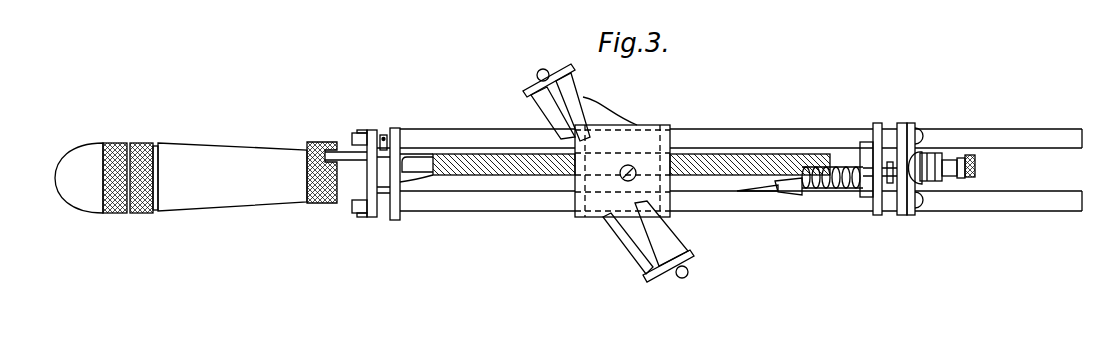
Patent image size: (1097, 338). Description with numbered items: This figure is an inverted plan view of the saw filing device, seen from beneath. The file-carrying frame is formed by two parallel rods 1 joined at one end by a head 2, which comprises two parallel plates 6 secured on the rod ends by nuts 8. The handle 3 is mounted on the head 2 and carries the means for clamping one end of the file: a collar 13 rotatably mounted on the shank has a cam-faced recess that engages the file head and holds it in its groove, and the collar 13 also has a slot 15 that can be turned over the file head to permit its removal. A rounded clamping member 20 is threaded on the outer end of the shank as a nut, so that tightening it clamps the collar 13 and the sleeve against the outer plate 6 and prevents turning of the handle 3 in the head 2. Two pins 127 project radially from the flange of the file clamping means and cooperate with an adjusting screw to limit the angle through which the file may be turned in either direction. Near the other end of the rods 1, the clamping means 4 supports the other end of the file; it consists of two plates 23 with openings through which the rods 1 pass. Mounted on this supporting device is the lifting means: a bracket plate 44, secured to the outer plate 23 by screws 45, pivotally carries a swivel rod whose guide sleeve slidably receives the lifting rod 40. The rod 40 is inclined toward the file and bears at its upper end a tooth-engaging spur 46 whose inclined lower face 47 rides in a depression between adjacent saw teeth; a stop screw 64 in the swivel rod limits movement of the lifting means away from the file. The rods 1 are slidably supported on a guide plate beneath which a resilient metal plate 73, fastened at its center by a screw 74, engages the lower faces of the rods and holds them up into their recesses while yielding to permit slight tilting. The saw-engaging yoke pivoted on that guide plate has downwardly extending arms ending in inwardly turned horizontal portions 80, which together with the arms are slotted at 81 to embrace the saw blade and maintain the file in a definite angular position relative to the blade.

The parallel rods 1 is at (464, 138).
The head 2 is at (401, 127).
The handle 3 is at (236, 166).
The clamping means 4 is at (865, 142).
The parallel plates 6 is at (370, 175).
The nuts 8 is at (362, 132).
The collar 13 is at (342, 182).
The slot 15 is at (345, 150).
The rounded clamping member 20 is at (87, 195).
The plates 23 is at (903, 215).
The lifting rod 40 is at (843, 189).
The bracket plate 44 is at (913, 215).
The screws 45 is at (922, 215).
The tooth-engaging spur 46 is at (797, 195).
The inclined lower face 47 is at (763, 192).
The stop screw 64 is at (975, 166).
The resilient metal plate 73 is at (648, 137).
The screw 74 is at (629, 165).
The horizontal portions 80 is at (572, 97).
The slots 81 is at (547, 101).
The pins 127 is at (383, 135).